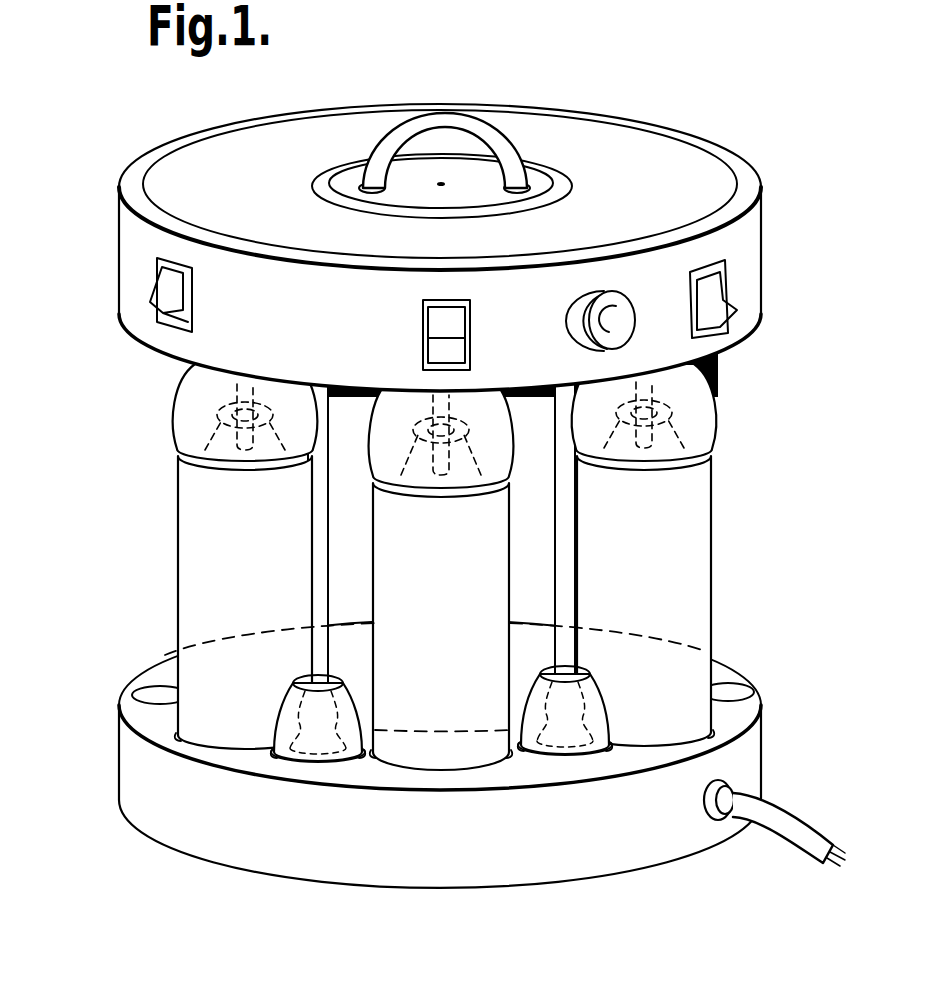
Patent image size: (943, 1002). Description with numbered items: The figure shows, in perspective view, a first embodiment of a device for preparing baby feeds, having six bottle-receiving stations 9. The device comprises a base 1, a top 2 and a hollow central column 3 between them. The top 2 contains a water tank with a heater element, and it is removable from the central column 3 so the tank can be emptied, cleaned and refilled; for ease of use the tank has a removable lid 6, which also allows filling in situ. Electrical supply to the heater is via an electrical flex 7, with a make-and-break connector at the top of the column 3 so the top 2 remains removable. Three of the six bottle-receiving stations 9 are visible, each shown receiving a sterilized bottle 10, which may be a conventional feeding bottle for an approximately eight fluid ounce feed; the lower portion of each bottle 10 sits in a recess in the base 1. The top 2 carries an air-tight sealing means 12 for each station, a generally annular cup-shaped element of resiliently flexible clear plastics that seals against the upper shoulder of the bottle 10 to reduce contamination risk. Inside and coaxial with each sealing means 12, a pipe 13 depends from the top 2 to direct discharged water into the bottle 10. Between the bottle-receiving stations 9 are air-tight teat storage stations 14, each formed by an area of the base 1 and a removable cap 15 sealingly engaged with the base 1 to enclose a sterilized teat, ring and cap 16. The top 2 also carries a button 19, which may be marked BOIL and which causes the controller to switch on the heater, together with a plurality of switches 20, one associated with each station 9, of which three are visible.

The base 1 is at (493, 870).
The top 2 is at (737, 243).
The central column 3 is at (547, 544).
The removable lid 6 is at (655, 138).
The electrical flex 7 is at (805, 827).
The bottle-receiving station 9 is at (266, 592).
The bottle 10 is at (262, 563).
The air-tight sealing means 12 is at (300, 435).
The pipe 13 is at (245, 384).
The teat storage station 14 is at (334, 778).
The cap 15 is at (277, 707).
The teat, ring and cap 16 is at (293, 772).
The button 19 is at (610, 318).
The switch 20 is at (163, 280).